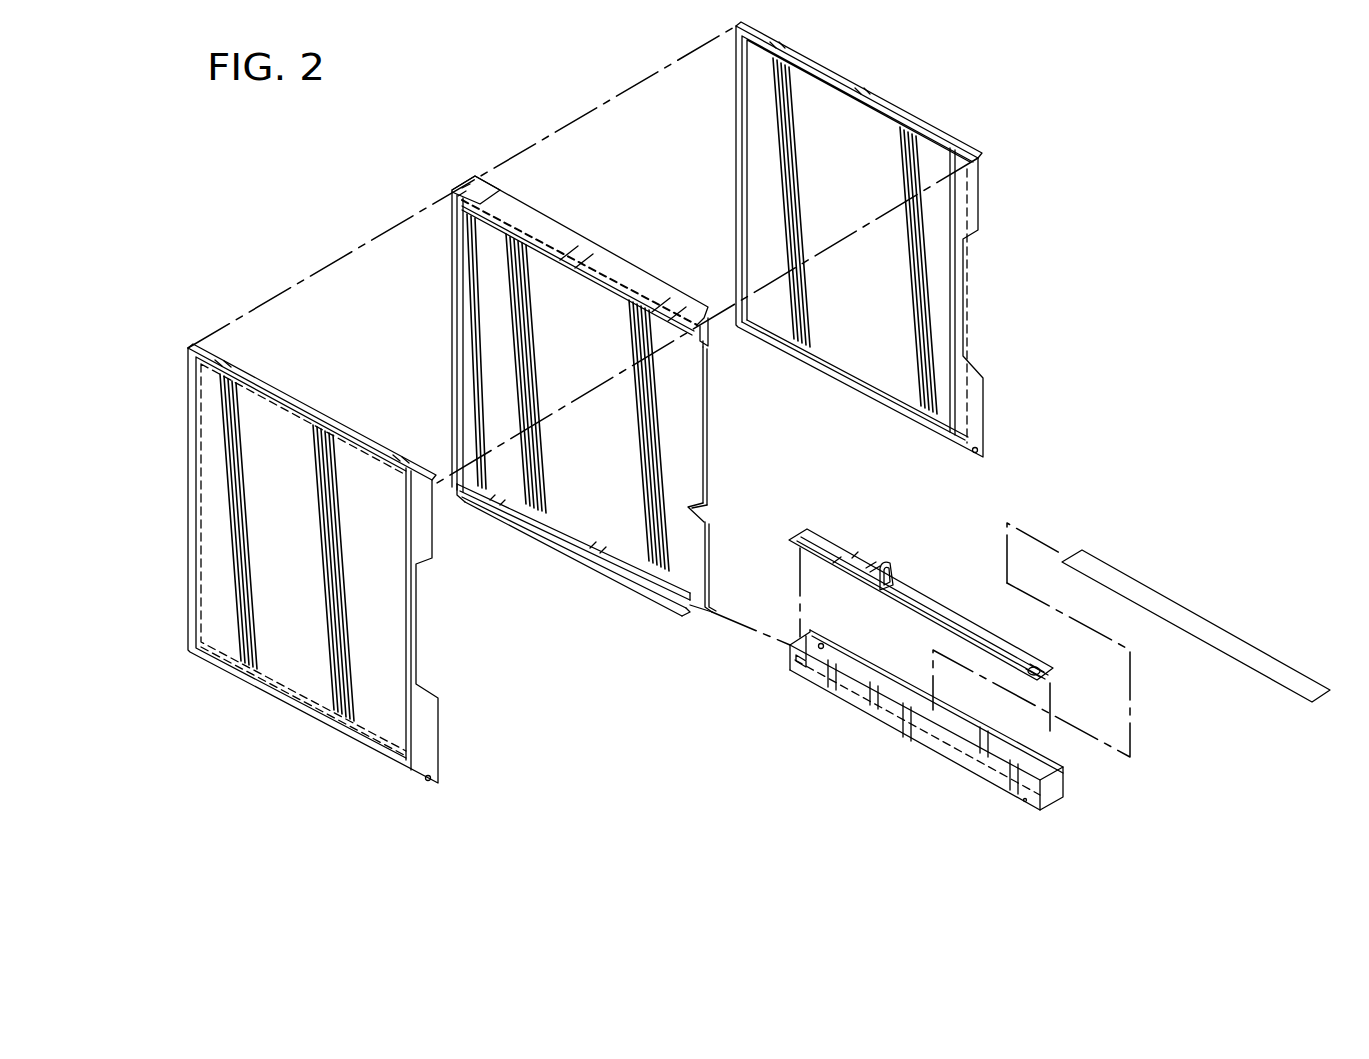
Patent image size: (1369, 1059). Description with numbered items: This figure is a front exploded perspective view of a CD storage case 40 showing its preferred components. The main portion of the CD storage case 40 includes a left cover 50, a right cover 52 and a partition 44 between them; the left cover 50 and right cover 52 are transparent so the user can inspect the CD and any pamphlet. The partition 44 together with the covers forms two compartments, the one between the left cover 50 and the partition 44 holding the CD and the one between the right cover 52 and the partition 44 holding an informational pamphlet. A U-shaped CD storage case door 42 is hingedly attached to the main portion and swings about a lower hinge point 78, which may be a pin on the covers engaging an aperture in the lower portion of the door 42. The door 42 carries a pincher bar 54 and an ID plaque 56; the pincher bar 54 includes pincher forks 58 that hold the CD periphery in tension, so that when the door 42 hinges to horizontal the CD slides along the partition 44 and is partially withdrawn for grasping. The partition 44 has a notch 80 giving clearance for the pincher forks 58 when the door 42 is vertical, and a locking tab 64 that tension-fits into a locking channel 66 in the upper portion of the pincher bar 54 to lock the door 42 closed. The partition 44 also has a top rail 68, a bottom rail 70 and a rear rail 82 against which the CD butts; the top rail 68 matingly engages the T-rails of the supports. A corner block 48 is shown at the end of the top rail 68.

The CD storage case 40 is at (1030, 188).
The CD storage case door 42 is at (970, 788).
The partition 44 is at (705, 457).
The corner block 48 is at (473, 183).
The left cover 50 is at (327, 676).
The right cover 52 is at (965, 316).
The pincher bar 54 is at (828, 543).
The ID plaque 56 is at (1103, 567).
The pincher forks 58 is at (897, 570).
The locking tab 64 is at (707, 345).
The locking channel 66 is at (1040, 663).
The top rail 68 is at (616, 262).
The bottom rail 70 is at (550, 542).
The lower hinge point 78 is at (803, 660).
The notch 80 is at (712, 515).
The rear rail 82 is at (455, 392).